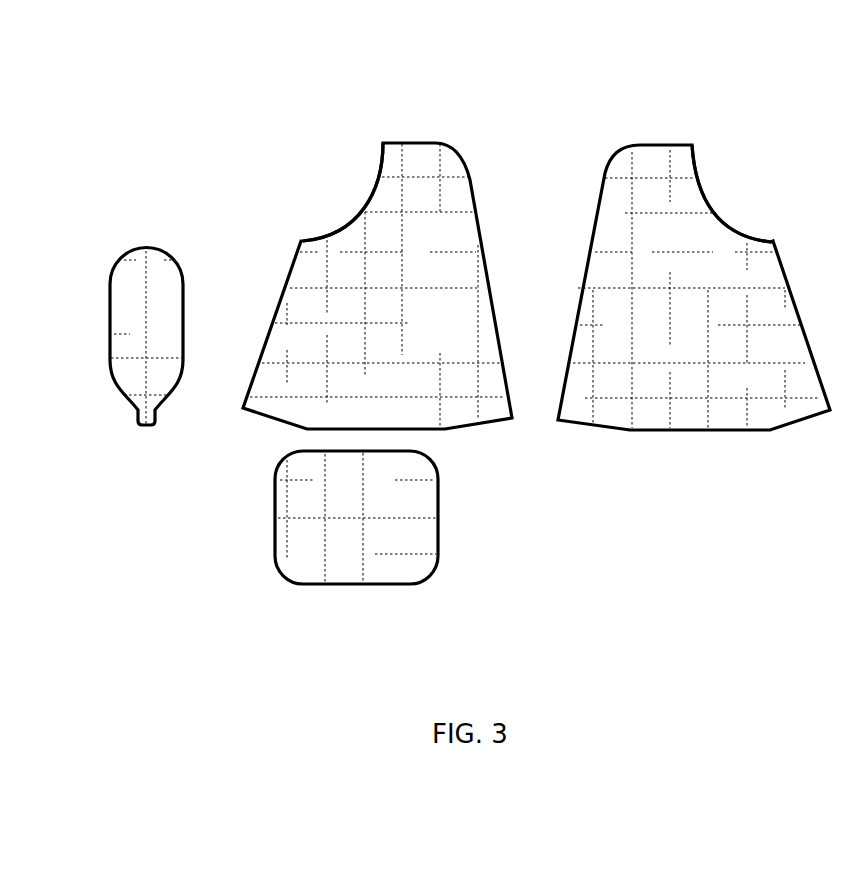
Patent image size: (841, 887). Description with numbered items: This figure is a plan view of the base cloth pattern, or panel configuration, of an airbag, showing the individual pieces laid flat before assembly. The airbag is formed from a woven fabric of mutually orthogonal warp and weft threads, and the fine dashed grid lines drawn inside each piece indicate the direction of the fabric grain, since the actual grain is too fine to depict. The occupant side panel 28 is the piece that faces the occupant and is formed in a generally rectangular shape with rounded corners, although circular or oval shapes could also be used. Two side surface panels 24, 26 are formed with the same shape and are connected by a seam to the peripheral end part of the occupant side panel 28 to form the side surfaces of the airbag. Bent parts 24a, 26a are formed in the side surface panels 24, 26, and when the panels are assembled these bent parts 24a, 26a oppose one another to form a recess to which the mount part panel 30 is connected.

The side surface panel 24 is at (419, 143).
The bent part 24a is at (345, 226).
The side surface panel 26 is at (660, 146).
The bent part 26a is at (722, 220).
The occupant side panel 28 is at (340, 585).
The mount part panel 30 is at (164, 244).